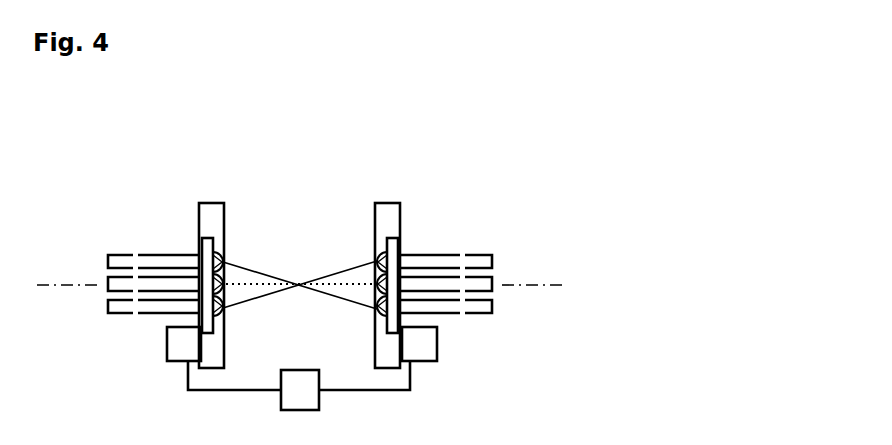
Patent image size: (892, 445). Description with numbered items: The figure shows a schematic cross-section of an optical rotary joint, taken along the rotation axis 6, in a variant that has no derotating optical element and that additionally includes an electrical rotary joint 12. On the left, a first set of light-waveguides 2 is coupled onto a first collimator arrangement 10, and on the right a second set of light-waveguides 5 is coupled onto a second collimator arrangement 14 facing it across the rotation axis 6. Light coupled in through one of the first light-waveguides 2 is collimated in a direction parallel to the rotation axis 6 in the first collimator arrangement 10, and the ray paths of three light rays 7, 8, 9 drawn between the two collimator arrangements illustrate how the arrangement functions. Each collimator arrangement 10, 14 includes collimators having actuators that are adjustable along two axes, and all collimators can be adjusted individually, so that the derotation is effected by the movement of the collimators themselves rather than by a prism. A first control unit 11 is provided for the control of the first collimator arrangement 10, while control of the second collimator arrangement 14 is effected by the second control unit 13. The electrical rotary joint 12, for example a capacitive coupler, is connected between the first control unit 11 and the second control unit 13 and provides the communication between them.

The first set of light-waveguides 2 is at (110, 255).
The second set of light-waveguides 5 is at (443, 238).
The rotation axis 6 is at (83, 295).
The light ray 7 is at (231, 257).
The light ray 8 is at (243, 282).
The light ray 9 is at (252, 297).
The first collimator arrangement 10 is at (205, 199).
The first control unit 11 is at (224, 358).
The electrical rotary joint 12 is at (300, 390).
The second control unit 13 is at (378, 358).
The second collimator arrangement 14 is at (382, 190).